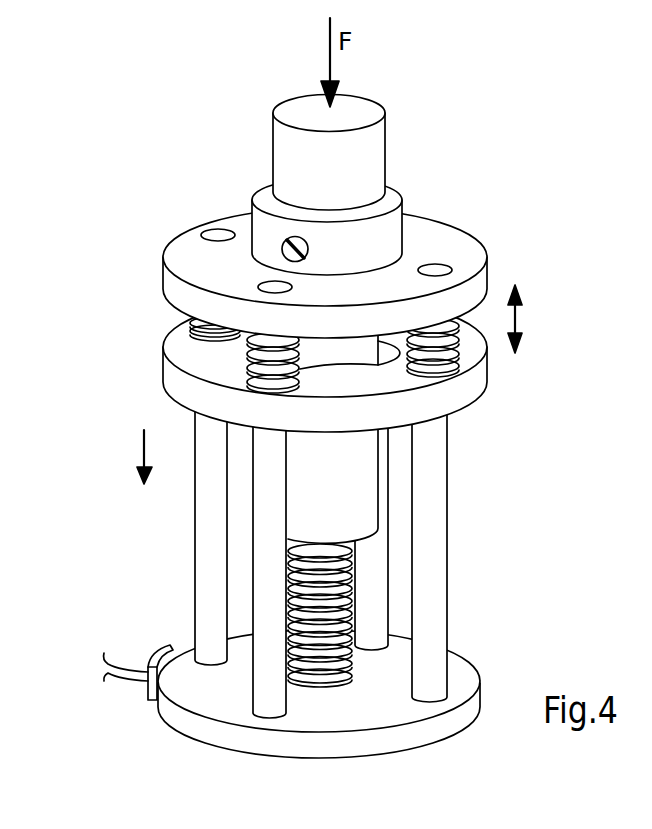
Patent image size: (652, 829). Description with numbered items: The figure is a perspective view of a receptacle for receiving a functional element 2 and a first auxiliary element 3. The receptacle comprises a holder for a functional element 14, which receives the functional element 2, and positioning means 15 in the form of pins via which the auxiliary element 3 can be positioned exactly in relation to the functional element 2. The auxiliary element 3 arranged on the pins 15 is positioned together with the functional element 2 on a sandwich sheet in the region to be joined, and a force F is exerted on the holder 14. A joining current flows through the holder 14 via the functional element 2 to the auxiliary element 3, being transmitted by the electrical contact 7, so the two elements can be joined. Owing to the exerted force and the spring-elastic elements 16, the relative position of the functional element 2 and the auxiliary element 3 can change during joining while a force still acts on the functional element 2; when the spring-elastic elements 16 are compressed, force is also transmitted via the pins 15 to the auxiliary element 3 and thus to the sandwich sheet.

The functional element 2 is at (350, 580).
The first auxiliary element 3 is at (415, 730).
The electrical contact 7 is at (153, 692).
The holder for a functional element 14 is at (352, 478).
The positioning means 15 is at (210, 547).
The spring-elastic elements 16 is at (247, 363).